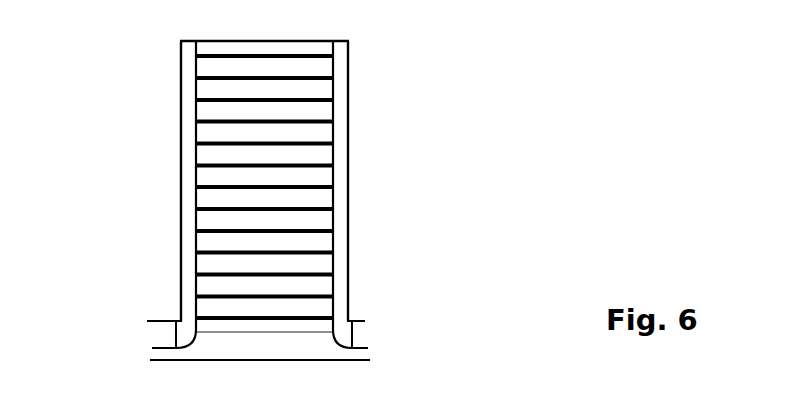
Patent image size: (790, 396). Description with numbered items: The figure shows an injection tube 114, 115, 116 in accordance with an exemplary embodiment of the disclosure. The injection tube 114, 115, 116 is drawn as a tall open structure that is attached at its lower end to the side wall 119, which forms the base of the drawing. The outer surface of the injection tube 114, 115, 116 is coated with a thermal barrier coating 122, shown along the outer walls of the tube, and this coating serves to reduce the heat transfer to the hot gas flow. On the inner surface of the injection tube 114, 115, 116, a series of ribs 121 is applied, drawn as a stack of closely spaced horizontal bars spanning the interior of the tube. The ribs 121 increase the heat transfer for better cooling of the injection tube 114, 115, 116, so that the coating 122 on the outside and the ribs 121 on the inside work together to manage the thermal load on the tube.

The injection tube 114 is at (288, 150).
The injection tube 115 is at (328, 176).
The injection tube 116 is at (324, 198).
The side wall 119 is at (368, 330).
The ribs 121 is at (197, 75).
The thermal barrier coating 122 is at (178, 223).